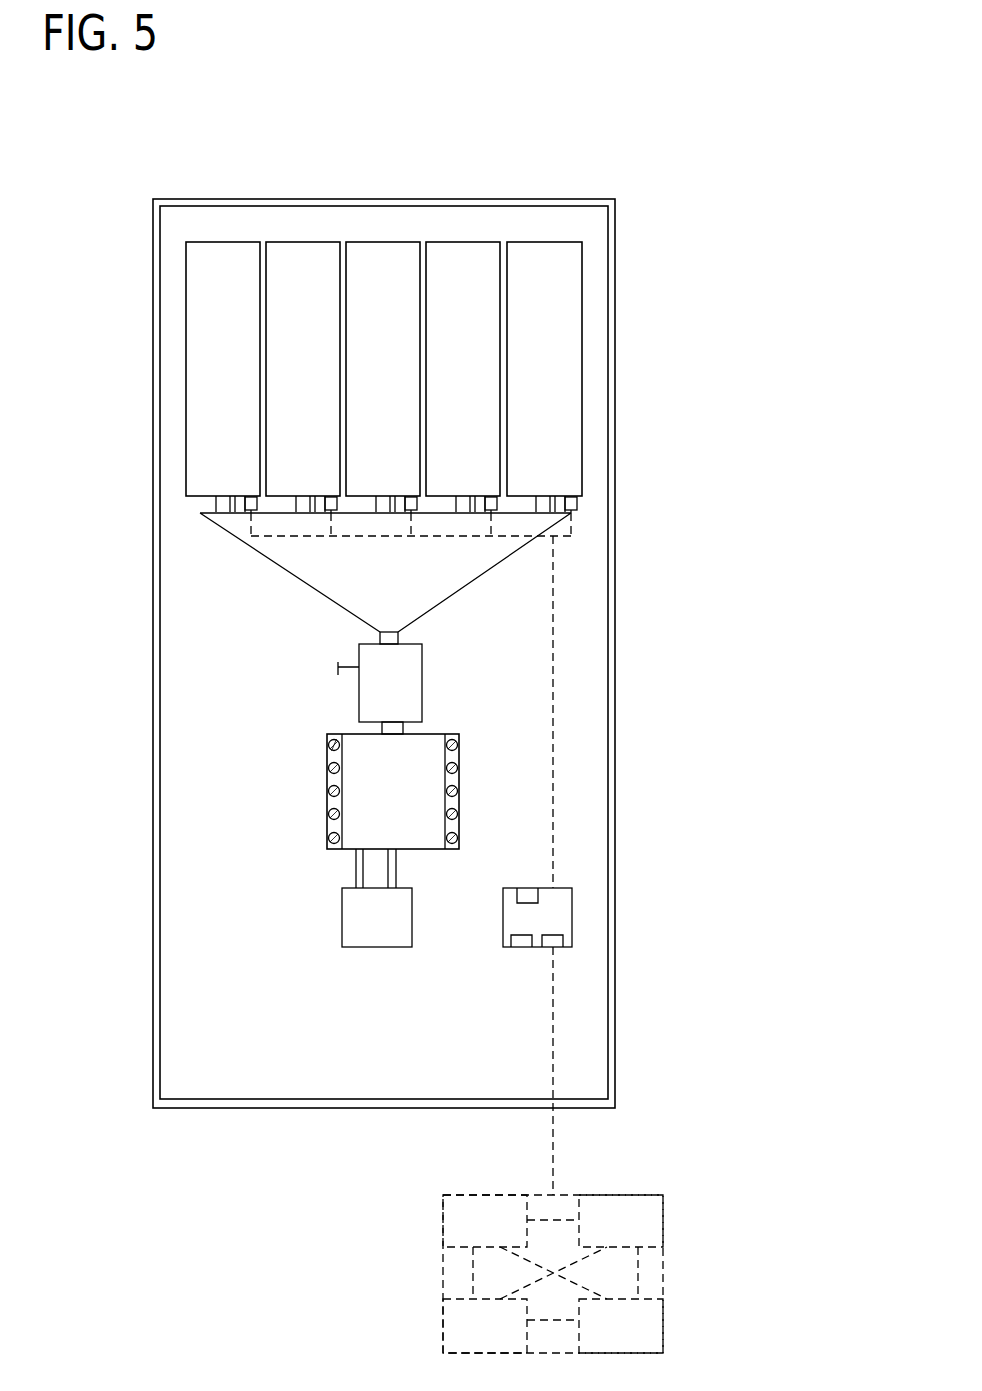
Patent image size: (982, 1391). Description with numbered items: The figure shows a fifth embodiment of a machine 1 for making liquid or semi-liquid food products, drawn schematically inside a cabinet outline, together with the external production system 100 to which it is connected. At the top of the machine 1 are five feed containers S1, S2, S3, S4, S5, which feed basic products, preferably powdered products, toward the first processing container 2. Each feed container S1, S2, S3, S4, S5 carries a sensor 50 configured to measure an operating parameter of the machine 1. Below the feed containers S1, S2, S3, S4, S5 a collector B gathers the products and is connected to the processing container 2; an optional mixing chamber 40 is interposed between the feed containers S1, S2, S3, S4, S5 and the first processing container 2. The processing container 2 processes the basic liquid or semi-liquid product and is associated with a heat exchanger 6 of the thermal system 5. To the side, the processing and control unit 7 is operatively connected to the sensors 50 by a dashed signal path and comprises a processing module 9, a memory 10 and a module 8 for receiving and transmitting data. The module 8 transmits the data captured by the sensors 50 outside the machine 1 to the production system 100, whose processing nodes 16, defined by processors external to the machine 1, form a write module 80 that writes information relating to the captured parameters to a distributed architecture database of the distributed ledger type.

The machine 1 is at (664, 194).
The feed container S1 is at (240, 333).
The feed container S2 is at (318, 333).
The feed container S3 is at (400, 333).
The feed container S4 is at (480, 333).
The feed container S5 is at (560, 333).
The sensor 50 is at (250, 490).
The collector B is at (379, 590).
The mixing chamber 40 is at (378, 692).
The heat exchanger 6 is at (345, 788).
The first processing container 2 is at (386, 800).
The thermal system 5 is at (367, 931).
The processing and control unit 7 is at (536, 918).
The processing module 9 is at (527, 898).
The memory 10 is at (522, 950).
The module for receiving and transmitting data 8 is at (557, 950).
The production system 100 is at (639, 1274).
The processing nodes 16 is at (553, 1274).
The write module 80 is at (610, 1337).